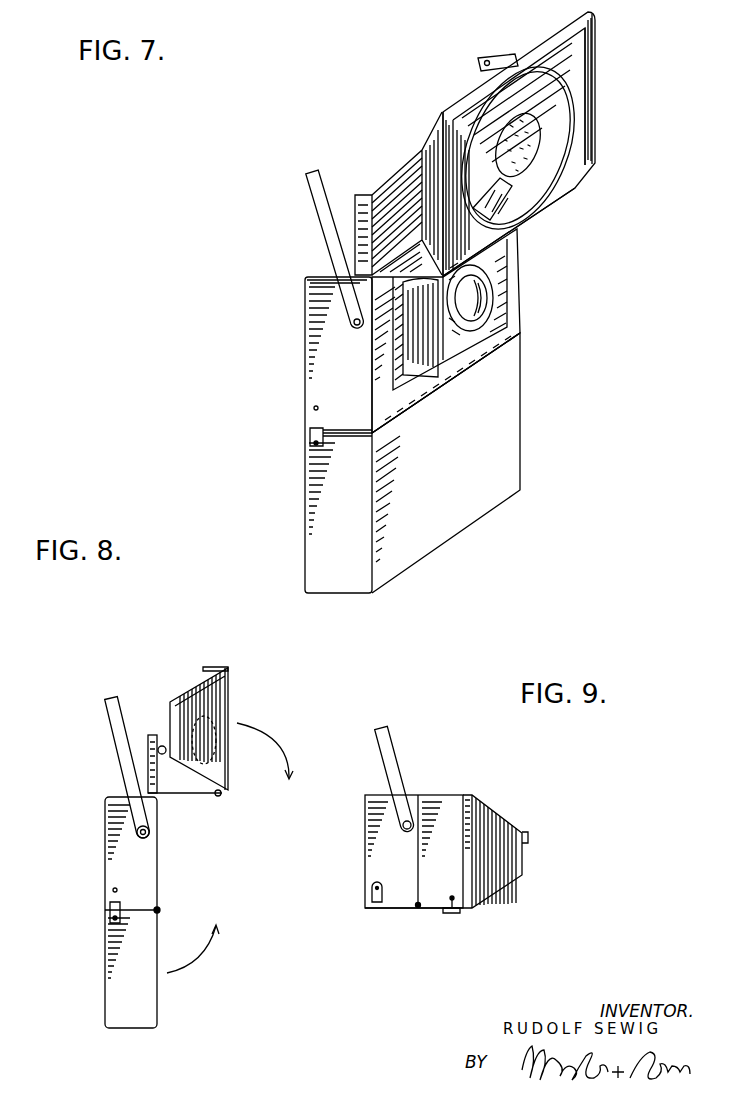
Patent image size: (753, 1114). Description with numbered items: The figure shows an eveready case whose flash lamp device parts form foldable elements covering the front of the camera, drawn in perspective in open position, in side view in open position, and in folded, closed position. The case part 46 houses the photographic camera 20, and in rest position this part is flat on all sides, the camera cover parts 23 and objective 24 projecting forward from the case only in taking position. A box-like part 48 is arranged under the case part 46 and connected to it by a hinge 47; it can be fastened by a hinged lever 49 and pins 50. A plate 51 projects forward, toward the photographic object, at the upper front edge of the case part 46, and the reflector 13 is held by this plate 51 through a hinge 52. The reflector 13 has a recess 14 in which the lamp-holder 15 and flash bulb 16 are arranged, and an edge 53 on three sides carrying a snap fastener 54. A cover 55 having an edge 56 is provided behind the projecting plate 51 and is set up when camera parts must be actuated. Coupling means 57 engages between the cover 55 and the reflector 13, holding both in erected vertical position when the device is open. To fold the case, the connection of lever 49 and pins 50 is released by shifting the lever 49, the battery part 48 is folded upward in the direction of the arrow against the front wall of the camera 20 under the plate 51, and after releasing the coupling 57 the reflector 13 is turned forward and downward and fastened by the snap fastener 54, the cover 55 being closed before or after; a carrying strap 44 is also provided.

In FIG. 7, the reflector 13 is at (577, 137).
In FIG. 8, the reflector 13 is at (188, 692).
In FIG. 9, the reflector 13 is at (497, 818).
In FIG. 7, the recess 14 is at (522, 190).
In FIG. 7, the lamp-holder 15 is at (500, 207).
In FIG. 7, the flash bulb 16 is at (524, 122).
In FIG. 7, the photographic camera 20 is at (396, 375).
In FIG. 7, the camera cover parts 23 is at (495, 272).
In FIG. 7, the objective 24 is at (490, 294).
In FIG. 7, the carrying strap 44 is at (314, 196).
In FIG. 8, the carrying strap 44 is at (120, 730).
In FIG. 9, the carrying strap 44 is at (391, 748).
In FIG. 7, the case part 46 is at (318, 380).
In FIG. 9, the case part 46 is at (378, 845).
In FIG. 7, the hinge 47 is at (510, 344).
In FIG. 8, the hinge 47 is at (157, 910).
In FIG. 7, the box-like part 48 is at (503, 465).
In FIG. 8, the box-like part 48 is at (110, 995).
In FIG. 9, the box-like part 48 is at (435, 897).
In FIG. 7, the hinged lever 49 is at (310, 438).
In FIG. 8, the hinged lever 49 is at (118, 902).
In FIG. 9, the hinged lever 49 is at (372, 895).
In FIG. 7, the pins 50 is at (314, 408).
In FIG. 8, the pins 50 is at (112, 918).
In FIG. 9, the pins 50 is at (452, 908).
In FIG. 7, the plate 51 is at (352, 307).
In FIG. 8, the plate 51 is at (180, 795).
In FIG. 7, the hinge 52 is at (573, 190).
In FIG. 7, the edge 53 is at (590, 55).
In FIG. 7, the snap fastener 54 is at (500, 60).
In FIG. 8, the snap fastener 54 is at (216, 667).
In FIG. 9, the snap fastener 54 is at (463, 913).
In FIG. 7, the cover 55 is at (408, 177).
In FIG. 7, the edge 56 is at (362, 212).
In FIG. 8, the edge 56 is at (150, 745).
In FIG. 8, the coupling means 57 is at (162, 745).